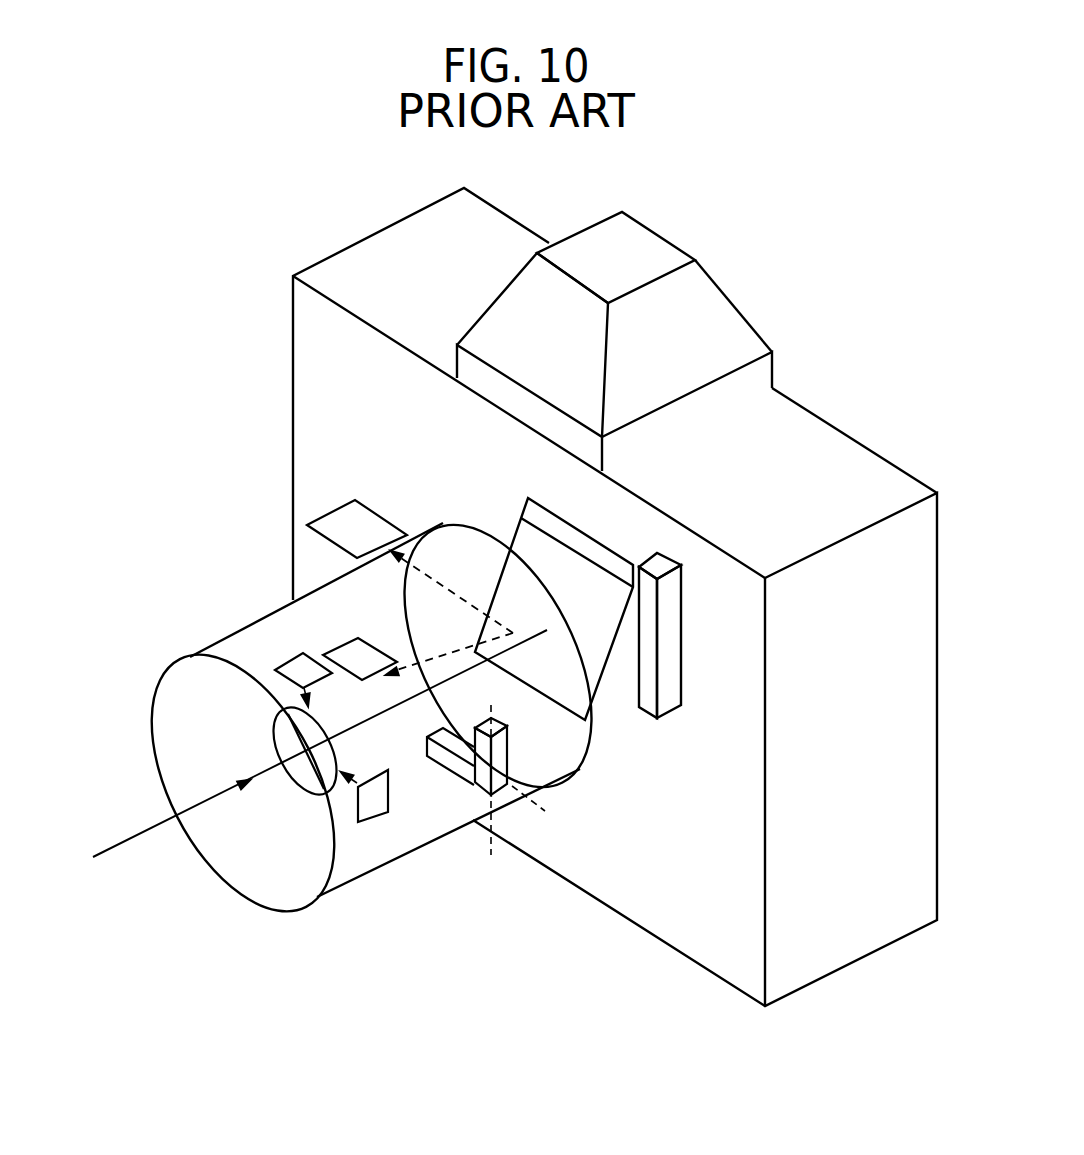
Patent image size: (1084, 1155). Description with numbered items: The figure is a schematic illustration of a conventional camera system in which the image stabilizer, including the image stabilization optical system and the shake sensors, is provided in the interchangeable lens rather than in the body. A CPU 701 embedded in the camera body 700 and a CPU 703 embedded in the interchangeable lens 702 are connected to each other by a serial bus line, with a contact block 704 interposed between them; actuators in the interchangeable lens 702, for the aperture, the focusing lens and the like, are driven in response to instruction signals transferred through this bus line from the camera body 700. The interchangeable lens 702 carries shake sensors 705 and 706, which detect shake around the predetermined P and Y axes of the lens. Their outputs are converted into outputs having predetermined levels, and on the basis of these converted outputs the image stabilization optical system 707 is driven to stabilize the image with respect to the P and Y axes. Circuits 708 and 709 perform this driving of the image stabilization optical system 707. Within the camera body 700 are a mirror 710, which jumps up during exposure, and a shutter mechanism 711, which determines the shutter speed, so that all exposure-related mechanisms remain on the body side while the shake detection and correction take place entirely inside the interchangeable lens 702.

The camera body 700 is at (857, 457).
The CPU 701 is at (333, 507).
The interchangeable lens 702 is at (328, 900).
The CPU 703 is at (342, 640).
The contact block 704 is at (475, 650).
The shake sensor 705 is at (507, 760).
The shake sensor 706 is at (432, 758).
The image stabilization optical system 707 is at (276, 745).
The circuit 708 is at (378, 814).
The circuit 709 is at (278, 666).
The mirror 710 is at (590, 683).
The shutter mechanism 711 is at (681, 646).